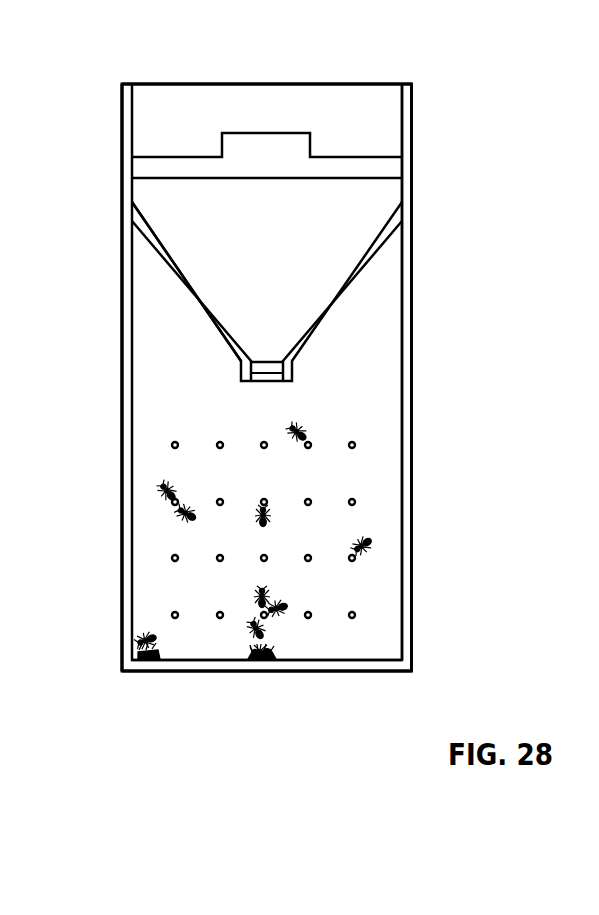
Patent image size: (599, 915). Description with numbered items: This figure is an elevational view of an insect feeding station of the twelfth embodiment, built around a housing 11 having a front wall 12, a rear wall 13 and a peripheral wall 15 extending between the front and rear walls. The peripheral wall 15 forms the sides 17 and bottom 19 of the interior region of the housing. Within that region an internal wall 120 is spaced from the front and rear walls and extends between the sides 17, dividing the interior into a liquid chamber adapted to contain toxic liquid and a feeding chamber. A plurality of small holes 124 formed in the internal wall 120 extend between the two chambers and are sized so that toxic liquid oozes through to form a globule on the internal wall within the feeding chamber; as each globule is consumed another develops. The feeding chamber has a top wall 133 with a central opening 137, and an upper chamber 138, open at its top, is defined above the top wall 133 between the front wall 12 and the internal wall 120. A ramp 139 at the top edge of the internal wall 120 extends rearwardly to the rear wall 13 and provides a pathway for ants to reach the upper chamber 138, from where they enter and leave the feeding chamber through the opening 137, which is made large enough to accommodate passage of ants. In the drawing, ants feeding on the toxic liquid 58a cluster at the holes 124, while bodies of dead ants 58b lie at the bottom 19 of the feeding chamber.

The housing 11 is at (420, 88).
The front wall 12 is at (388, 192).
The rear wall 13 is at (363, 84).
The peripheral wall 15 is at (404, 373).
The sides 17 is at (408, 470).
The bottom 19 is at (330, 662).
The ants feeding on the toxic liquid 58a is at (372, 538).
The bodies of dead ants 58b is at (262, 672).
The internal wall 120 is at (372, 156).
The holes 124 is at (171, 558).
The top wall 133 is at (183, 291).
The central opening 137 is at (266, 373).
The upper chamber 138 is at (355, 213).
The ramp 139 is at (272, 136).